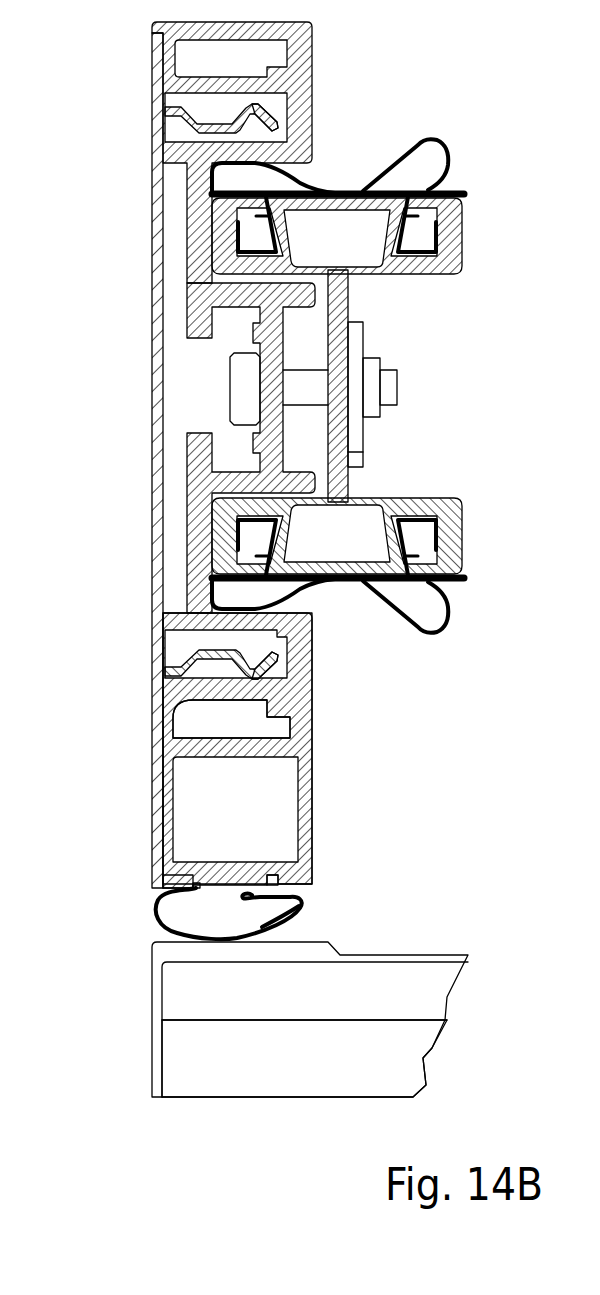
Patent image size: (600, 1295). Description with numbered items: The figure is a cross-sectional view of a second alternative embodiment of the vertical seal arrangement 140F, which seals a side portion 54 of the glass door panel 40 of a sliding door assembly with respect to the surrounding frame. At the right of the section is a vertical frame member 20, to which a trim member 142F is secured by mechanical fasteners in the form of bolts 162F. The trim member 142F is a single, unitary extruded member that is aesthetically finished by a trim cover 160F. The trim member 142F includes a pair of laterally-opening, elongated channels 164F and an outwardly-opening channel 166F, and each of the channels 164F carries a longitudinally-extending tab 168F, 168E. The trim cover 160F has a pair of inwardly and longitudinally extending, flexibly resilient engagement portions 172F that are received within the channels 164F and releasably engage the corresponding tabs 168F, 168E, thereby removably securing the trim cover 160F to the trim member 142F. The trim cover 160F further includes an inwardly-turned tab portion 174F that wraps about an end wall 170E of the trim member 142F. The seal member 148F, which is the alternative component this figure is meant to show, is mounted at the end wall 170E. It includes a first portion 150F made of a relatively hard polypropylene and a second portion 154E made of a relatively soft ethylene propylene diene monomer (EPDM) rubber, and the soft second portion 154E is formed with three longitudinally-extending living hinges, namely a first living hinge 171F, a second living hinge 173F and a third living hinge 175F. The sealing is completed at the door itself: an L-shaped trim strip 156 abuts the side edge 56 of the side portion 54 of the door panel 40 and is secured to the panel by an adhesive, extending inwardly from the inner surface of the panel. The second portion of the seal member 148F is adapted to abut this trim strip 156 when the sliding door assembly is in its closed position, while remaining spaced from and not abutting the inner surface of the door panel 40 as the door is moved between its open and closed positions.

The vertical frame member 20 is at (478, 240).
The glass door panel 40 is at (132, 978).
The side portion 54 is at (240, 1055).
The side edge 56 is at (150, 1045).
The vertical seal arrangement 140F is at (115, 853).
The trim member 142F is at (168, 518).
The seal member 148F is at (134, 914).
The first portion 150F is at (222, 905).
The second portion 154E is at (276, 932).
The trim strip 156 is at (151, 950).
The trim cover 160F is at (134, 606).
The bolt 162F is at (230, 390).
The laterally-opening elongated channel 164F is at (272, 122).
The outwardly-opening channel 166F is at (273, 757).
The longitudinally-extending tab 168F is at (241, 110).
The longitudinally-extending tab 168E is at (244, 672).
The end wall 170E is at (207, 921).
The first living hinge 171F is at (302, 891).
The engagement portion 172F is at (207, 120).
The second living hinge 173F is at (280, 900).
The inwardly-turned tab portion 174F is at (178, 885).
The third living hinge 175F is at (250, 930).